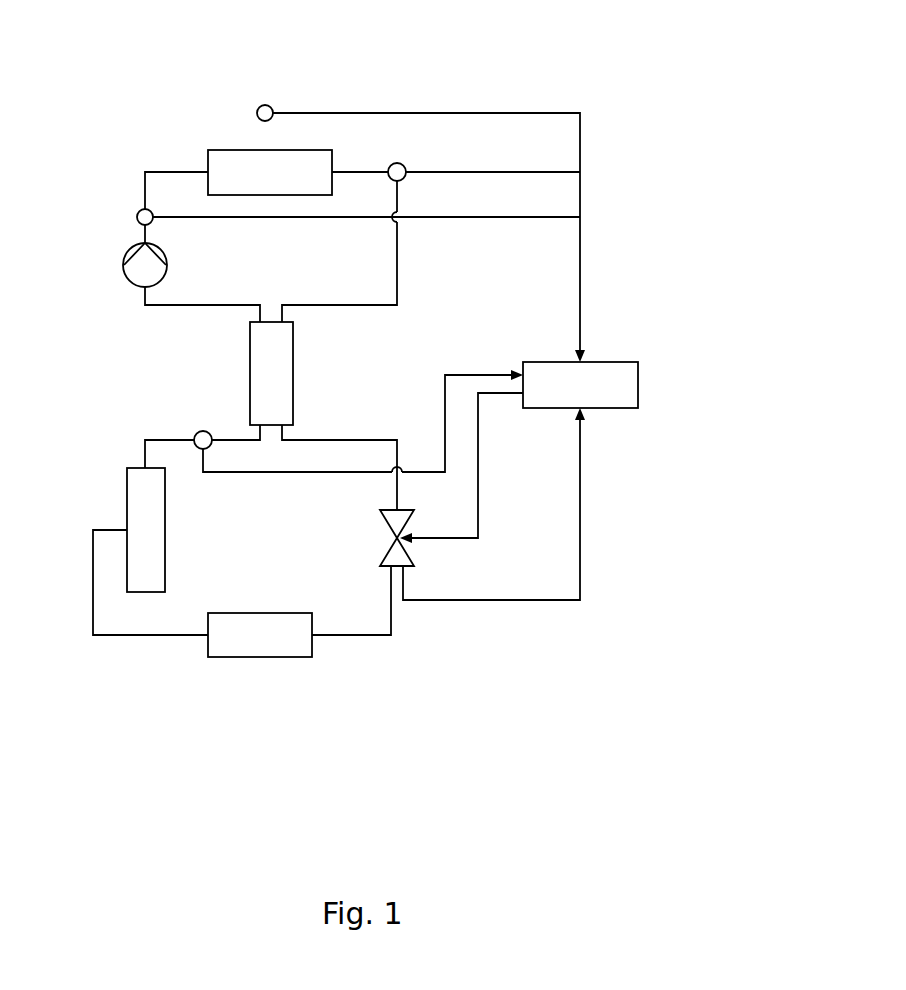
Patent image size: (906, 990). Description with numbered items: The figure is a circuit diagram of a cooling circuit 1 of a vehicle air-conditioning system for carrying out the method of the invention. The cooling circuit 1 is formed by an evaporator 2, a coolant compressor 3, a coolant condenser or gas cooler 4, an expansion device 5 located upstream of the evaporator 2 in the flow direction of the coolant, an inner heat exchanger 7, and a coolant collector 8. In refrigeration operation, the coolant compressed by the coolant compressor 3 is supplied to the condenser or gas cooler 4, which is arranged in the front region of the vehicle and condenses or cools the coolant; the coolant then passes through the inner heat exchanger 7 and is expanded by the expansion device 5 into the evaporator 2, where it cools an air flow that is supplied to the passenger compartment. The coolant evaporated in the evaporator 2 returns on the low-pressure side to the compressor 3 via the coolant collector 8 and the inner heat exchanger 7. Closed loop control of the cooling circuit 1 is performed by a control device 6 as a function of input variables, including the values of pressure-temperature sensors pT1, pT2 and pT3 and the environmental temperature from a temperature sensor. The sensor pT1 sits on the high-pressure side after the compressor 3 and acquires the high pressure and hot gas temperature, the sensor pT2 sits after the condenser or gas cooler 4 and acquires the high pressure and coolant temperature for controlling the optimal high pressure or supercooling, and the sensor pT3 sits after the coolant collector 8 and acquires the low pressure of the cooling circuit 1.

The cooling circuit 1 is at (710, 198).
The evaporator 2 is at (266, 646).
The coolant compressor 3 is at (123, 266).
The coolant condenser or gas cooler 4 is at (276, 184).
The expansion device 5 is at (386, 549).
The control device 6 is at (586, 395).
The inner heat exchanger 7 is at (277, 377).
The coolant collector 8 is at (152, 539).
The pressure-temperature sensor pT1 is at (137, 217).
The pressure-temperature sensor pT2 is at (404, 165).
The pressure-temperature sensor pT3 is at (203, 431).